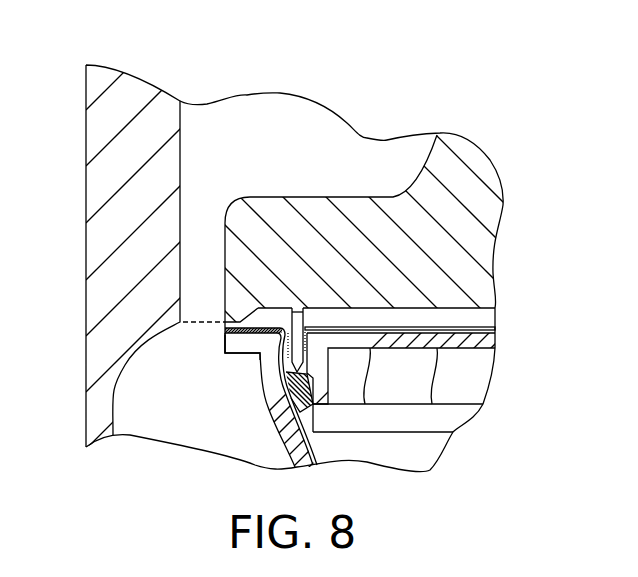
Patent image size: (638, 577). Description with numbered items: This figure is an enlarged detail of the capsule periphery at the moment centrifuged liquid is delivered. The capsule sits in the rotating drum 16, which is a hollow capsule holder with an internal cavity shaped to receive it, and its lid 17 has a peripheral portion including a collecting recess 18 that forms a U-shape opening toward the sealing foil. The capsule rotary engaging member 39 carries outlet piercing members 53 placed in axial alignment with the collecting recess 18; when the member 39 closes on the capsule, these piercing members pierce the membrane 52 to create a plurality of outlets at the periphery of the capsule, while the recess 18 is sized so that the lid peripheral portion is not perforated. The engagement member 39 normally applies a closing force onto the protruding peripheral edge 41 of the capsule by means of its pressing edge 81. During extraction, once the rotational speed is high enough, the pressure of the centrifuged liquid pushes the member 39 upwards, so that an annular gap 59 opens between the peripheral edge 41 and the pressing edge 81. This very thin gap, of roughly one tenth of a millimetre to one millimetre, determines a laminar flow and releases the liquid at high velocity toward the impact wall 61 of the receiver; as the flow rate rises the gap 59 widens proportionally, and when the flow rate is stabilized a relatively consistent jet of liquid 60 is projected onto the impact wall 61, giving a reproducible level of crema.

The impact wall 61 is at (96, 246).
The jet of liquid 60 is at (193, 325).
The capsule rotary engaging member 39 is at (496, 204).
The outlet piercing members 53 is at (305, 310).
The pressing edge 81 is at (236, 321).
The membrane 52 is at (496, 328).
The lid 17 is at (503, 328).
The annular gap 59 is at (226, 332).
The rotating drum 16 is at (285, 422).
The protruding peripheral edge 41 is at (234, 357).
The collecting recess 18 is at (300, 372).